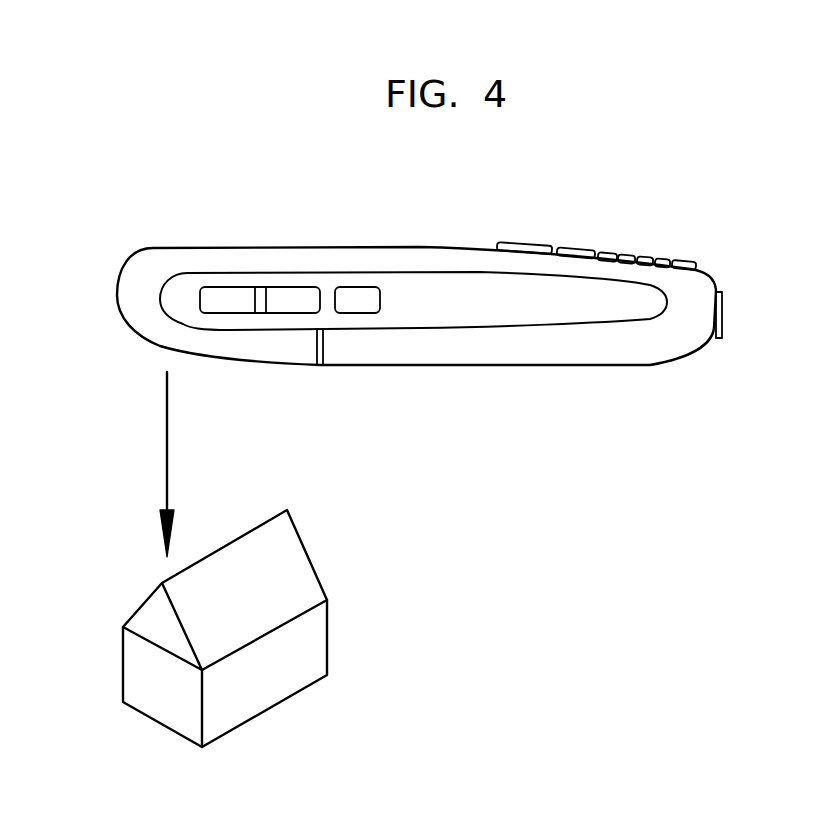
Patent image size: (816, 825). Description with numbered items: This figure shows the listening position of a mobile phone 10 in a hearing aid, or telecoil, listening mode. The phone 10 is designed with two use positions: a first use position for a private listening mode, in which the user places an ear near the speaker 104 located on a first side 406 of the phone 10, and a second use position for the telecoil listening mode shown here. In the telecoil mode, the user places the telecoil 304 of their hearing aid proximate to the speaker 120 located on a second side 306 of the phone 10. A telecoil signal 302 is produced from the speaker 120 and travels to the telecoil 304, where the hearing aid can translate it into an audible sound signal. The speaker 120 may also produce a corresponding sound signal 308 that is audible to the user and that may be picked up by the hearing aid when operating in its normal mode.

The phone 10 is at (68, 362).
The speaker 104 is at (163, 232).
The first side 406 is at (355, 218).
The second side 306 is at (427, 380).
The speaker 120 is at (152, 363).
The telecoil signal 302 is at (180, 442).
The sound signal 308 is at (150, 481).
The telecoil 304 is at (350, 648).